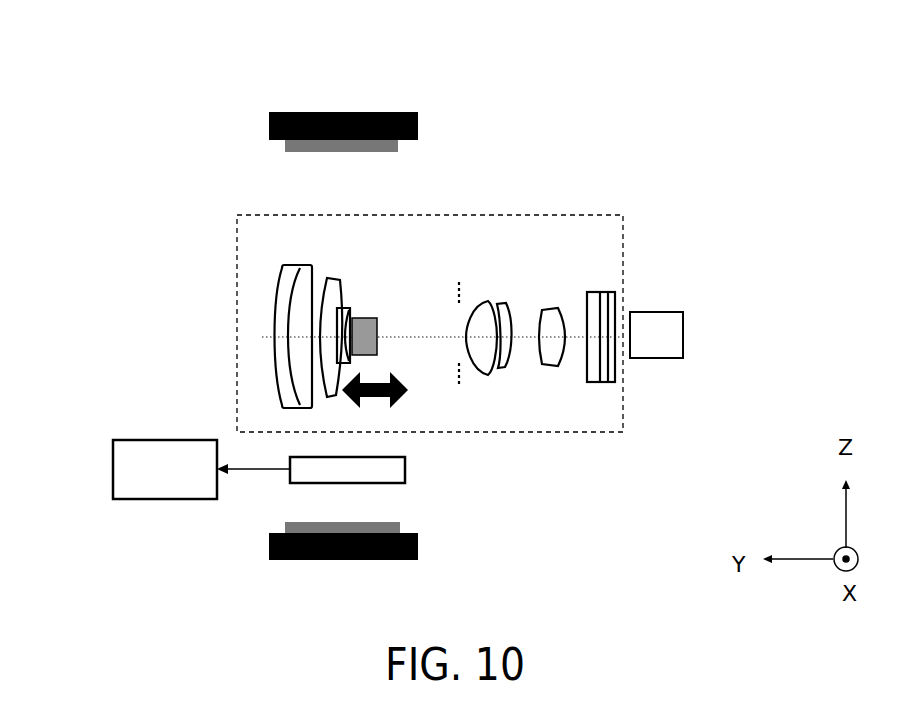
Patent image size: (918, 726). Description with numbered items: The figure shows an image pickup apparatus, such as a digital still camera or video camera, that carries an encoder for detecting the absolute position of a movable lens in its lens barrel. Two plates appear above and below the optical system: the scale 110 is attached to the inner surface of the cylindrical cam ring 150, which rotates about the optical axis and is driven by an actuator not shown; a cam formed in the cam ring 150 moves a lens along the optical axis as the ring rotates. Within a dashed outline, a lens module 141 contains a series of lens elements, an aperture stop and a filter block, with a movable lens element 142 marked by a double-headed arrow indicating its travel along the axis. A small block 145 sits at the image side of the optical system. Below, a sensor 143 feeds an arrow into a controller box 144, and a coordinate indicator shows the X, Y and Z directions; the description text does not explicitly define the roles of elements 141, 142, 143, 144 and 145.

The scale 110 is at (398, 146).
The lens module 141 is at (257, 265).
The movable lens element 142 is at (375, 315).
The sensor 143 is at (405, 468).
The controller 144 is at (112, 470).
The image sensor 145 is at (668, 343).
The cam ring 150 is at (378, 112).